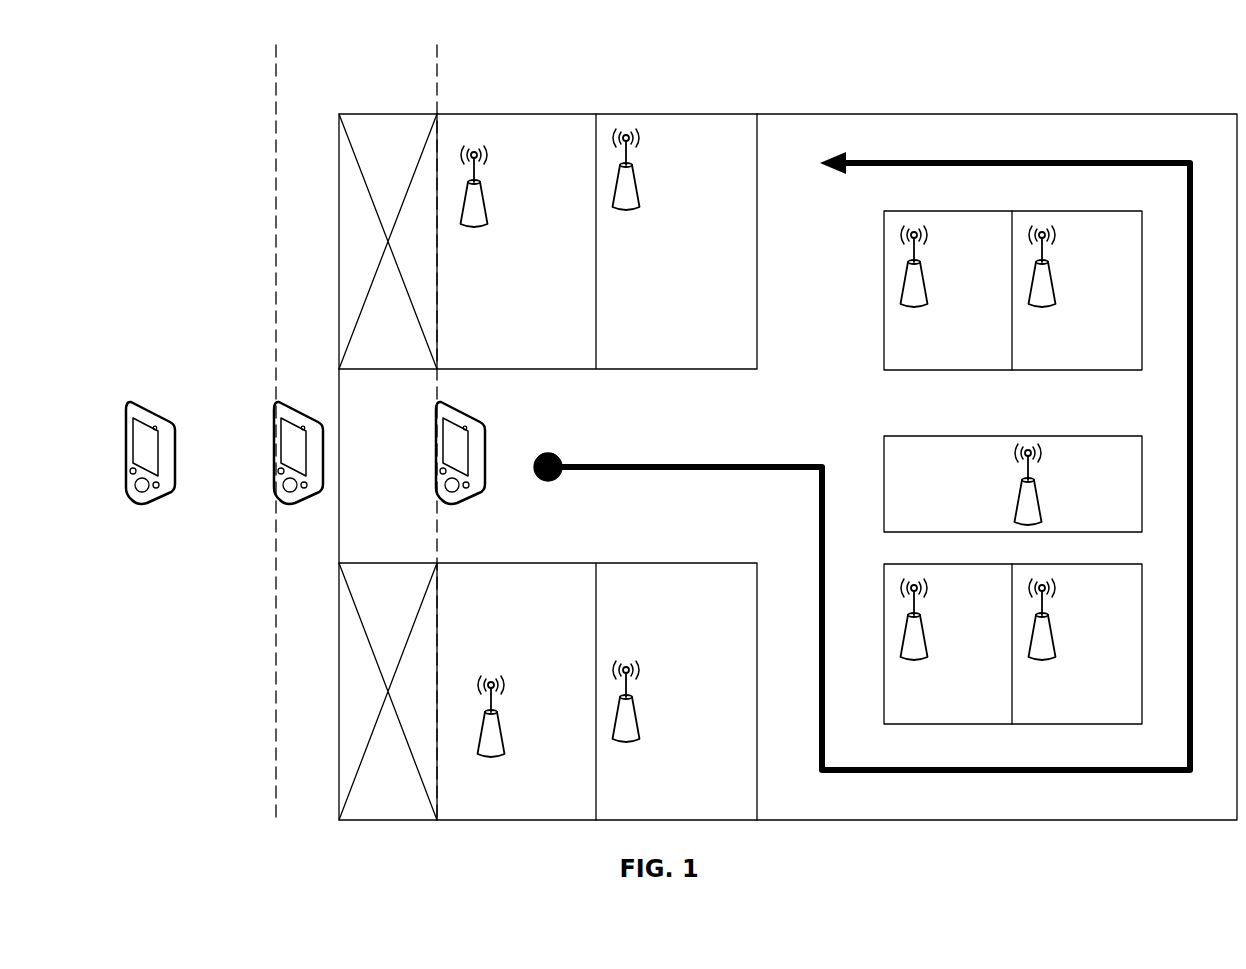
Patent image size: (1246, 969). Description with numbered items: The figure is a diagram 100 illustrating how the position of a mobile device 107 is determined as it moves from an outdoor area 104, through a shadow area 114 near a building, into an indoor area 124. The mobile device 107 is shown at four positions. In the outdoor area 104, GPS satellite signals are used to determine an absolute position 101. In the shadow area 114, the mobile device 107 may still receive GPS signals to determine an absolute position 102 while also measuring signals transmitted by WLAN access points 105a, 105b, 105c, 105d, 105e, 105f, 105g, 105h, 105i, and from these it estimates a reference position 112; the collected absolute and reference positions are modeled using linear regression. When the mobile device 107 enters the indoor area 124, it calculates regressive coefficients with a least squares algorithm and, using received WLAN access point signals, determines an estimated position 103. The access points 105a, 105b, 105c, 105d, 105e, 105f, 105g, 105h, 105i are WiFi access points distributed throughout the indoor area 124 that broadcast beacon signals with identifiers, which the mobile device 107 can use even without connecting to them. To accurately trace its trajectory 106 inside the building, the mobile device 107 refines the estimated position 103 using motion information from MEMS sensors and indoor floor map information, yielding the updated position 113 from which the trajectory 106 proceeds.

The diagram 100 is at (160, 208).
The absolute position 101 is at (184, 399).
The absolute position 102 is at (328, 417).
The estimated position 103 is at (493, 415).
The outdoor area 104 is at (161, 104).
The WLAN access point 105a is at (512, 211).
The WLAN access point 105b is at (664, 194).
The WLAN access point 105c is at (951, 291).
The WLAN access point 105d is at (1080, 291).
The WLAN access point 105e is at (1069, 484).
The WLAN access point 105f is at (1079, 644).
The WLAN access point 105g is at (952, 644).
The WLAN access point 105h is at (664, 726).
The WLAN access point 105i is at (526, 741).
The trajectory 106 is at (698, 471).
The mobile device 107 is at (174, 484).
The reference position 112 is at (343, 466).
The updated position 113 is at (568, 449).
The shadow area 114 is at (339, 104).
The indoor area 124 is at (529, 104).